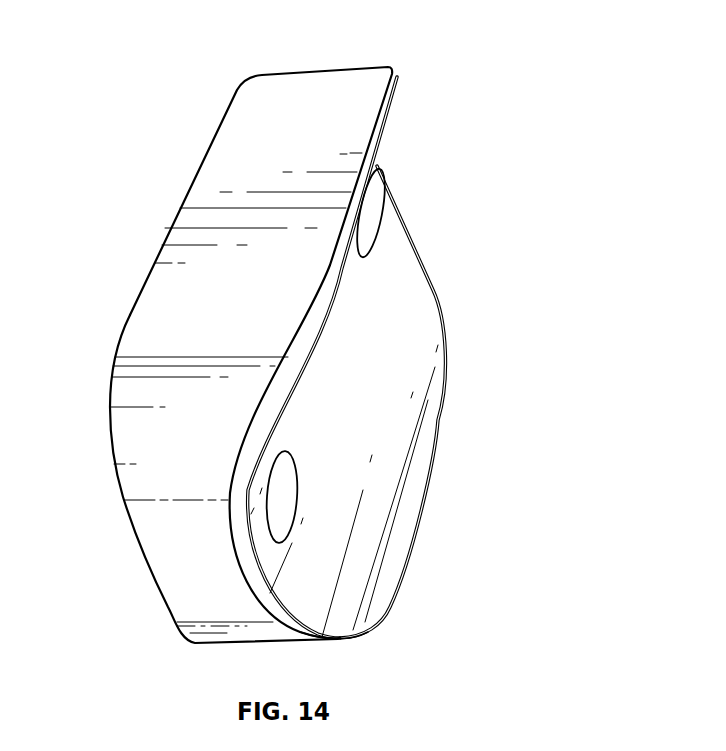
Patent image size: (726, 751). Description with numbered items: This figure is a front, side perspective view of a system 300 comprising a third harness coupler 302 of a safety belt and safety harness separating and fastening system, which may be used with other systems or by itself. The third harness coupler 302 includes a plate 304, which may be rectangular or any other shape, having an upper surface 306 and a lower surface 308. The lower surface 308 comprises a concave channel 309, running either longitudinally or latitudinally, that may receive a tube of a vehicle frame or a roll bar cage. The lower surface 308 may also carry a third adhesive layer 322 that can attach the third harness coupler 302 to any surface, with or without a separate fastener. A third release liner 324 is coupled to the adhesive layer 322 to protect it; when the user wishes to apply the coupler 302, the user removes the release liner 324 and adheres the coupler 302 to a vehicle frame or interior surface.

The system 300 is at (337, 344).
The third harness coupler 302 is at (306, 82).
The plate 304 is at (257, 127).
The upper surface 306 is at (133, 288).
The lower surface 308 is at (348, 620).
The concave channel 309 is at (415, 376).
The third adhesive layer 322 is at (388, 114).
The third release liner 324 is at (402, 281).